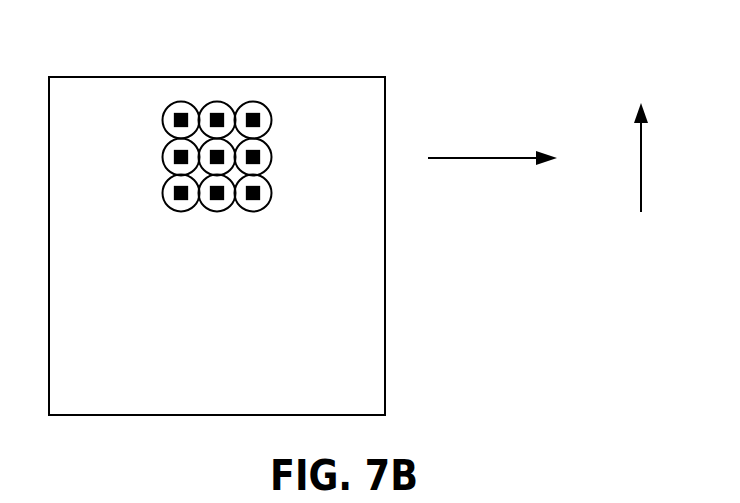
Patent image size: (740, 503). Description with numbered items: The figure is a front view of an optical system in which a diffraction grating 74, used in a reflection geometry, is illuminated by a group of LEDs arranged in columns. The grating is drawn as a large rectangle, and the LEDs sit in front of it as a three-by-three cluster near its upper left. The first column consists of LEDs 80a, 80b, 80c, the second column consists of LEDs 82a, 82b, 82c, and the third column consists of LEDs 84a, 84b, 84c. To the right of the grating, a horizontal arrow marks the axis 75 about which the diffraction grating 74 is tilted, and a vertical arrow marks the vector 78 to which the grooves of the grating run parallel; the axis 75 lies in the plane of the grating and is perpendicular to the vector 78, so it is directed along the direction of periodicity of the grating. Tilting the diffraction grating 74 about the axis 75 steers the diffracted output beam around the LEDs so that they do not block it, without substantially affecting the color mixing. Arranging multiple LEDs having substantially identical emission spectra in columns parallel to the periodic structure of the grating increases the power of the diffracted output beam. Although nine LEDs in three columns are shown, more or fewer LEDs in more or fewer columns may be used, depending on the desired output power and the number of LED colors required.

The diffraction grating 74 is at (353, 77).
The axis 75 is at (468, 159).
The vector 78 is at (641, 203).
The LED 80a is at (163, 121).
The LED 80b is at (163, 157).
The LED 80c is at (163, 193).
The LED 82a is at (217, 102).
The LED 82b is at (232, 174).
The LED 82c is at (209, 212).
The LED 84a is at (272, 121).
The LED 84b is at (272, 157).
The LED 84c is at (272, 193).